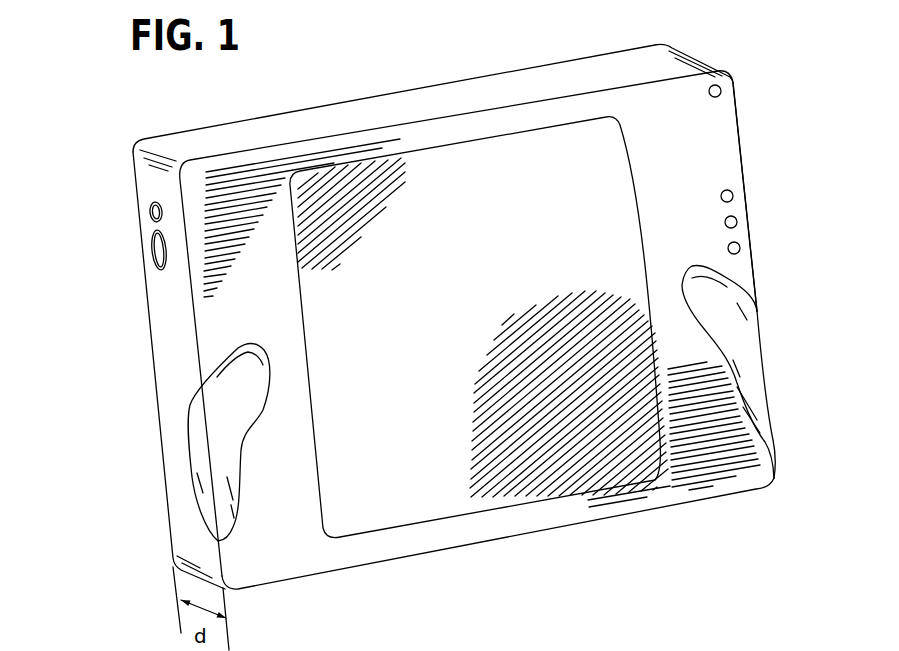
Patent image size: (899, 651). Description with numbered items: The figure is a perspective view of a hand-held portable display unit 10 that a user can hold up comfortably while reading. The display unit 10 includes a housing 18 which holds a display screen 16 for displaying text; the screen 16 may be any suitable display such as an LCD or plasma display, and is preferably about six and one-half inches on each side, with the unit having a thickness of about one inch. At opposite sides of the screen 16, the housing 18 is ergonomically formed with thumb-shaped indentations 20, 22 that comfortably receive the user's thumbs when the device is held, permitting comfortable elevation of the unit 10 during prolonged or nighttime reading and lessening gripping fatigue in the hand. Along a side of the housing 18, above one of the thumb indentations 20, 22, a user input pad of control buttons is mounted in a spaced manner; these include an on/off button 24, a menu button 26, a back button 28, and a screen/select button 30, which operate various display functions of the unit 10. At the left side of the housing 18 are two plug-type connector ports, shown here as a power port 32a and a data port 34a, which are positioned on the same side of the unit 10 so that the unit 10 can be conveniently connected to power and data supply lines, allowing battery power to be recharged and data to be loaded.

The hand-held portable display unit 10 is at (510, 62).
The display screen 16 is at (417, 297).
The housing 18 is at (318, 552).
The thumb-shaped indentation 20 is at (227, 430).
The thumb-shaped indentation 22 is at (740, 327).
The on/off button 24 is at (721, 89).
The menu button 26 is at (733, 194).
The back button 28 is at (737, 221).
The screen/select button 30 is at (740, 247).
The port 32a is at (148, 208).
The port 34a is at (157, 256).